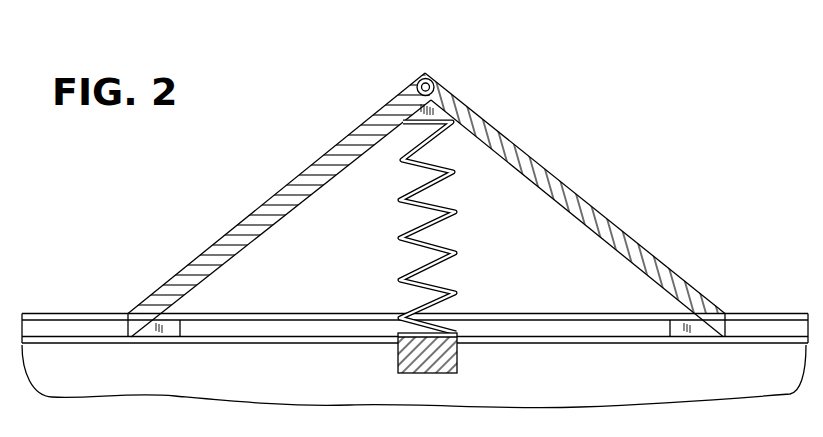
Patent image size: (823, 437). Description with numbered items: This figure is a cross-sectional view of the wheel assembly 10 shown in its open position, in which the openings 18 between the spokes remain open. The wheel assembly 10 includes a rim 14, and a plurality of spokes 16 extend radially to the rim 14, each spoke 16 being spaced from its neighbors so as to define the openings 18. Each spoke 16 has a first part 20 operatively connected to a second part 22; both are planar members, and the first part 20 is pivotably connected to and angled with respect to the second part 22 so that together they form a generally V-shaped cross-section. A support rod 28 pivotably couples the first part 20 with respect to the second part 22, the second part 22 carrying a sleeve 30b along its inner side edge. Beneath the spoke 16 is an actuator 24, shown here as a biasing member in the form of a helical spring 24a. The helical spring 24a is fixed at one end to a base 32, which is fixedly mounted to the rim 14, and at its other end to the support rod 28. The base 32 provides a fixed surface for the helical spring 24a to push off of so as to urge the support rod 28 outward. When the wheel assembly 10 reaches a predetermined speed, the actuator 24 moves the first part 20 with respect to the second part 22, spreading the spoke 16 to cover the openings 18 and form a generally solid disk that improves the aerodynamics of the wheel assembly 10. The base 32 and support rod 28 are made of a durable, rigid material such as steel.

The wheel assembly 10 is at (650, 108).
The rim 14 is at (107, 328).
The spoke 16 is at (680, 210).
The opening 18 is at (44, 295).
The first part 20 is at (320, 153).
The second part 22 is at (524, 150).
The actuator 24 is at (378, 240).
The helical spring 24a is at (428, 218).
The support rod 28 is at (426, 78).
The sleeve 30b is at (434, 82).
The base 32 is at (457, 357).